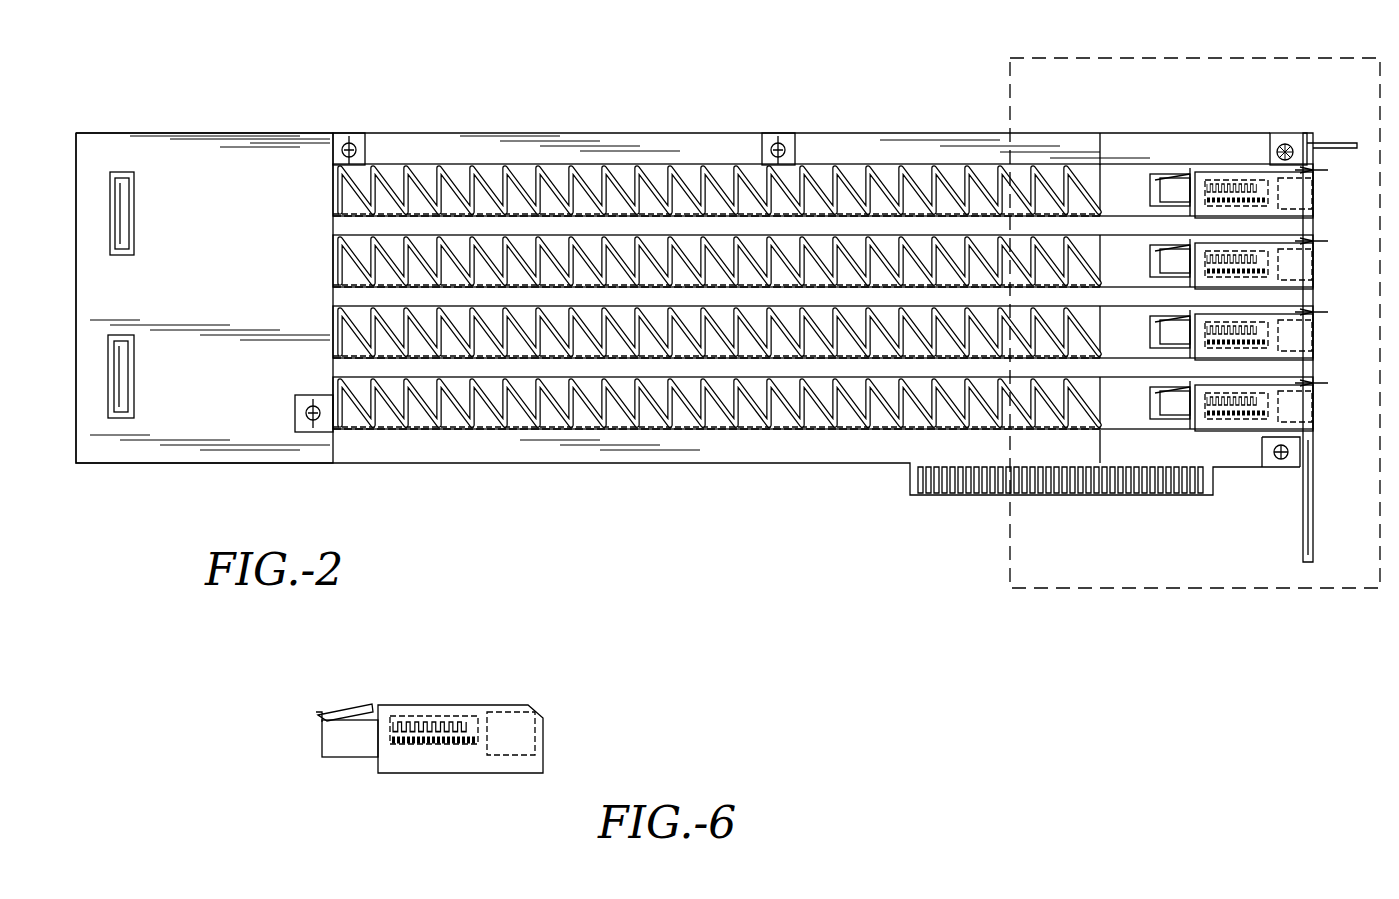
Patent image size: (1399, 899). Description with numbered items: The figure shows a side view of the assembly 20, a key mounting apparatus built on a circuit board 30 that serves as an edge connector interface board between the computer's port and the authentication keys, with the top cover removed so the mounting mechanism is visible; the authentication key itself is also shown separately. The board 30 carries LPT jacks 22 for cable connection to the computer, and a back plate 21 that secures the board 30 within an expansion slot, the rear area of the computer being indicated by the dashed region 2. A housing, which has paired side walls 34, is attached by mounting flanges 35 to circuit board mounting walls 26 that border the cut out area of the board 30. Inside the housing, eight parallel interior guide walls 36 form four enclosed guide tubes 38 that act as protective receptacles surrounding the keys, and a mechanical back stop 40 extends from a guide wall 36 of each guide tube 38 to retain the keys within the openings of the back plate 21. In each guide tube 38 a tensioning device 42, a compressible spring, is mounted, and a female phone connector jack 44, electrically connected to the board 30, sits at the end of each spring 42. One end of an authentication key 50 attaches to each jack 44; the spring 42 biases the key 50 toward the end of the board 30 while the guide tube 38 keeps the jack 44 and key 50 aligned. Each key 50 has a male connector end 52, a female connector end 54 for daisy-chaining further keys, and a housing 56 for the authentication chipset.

In FIG. 2, the cabinet / housing region 2 is at (1280, 594).
In FIG. 2, the assembly 20 is at (771, 100).
In FIG. 2, the back plate 21 is at (1343, 146).
In FIG. 2, the LPT jack 22 is at (124, 172).
In FIG. 2, the circuit board mounting walls 26 is at (490, 134).
In FIG. 2, the circuit board 30 is at (206, 212).
In FIG. 2, the side walls 34 is at (772, 432).
In FIG. 2, the mounting flanges 35 is at (348, 140).
In FIG. 2, the interior guide walls 36 is at (520, 167).
In FIG. 2, the guide tubes 38 is at (597, 382).
In FIG. 2, the mechanical back stop 40 is at (1290, 156).
In FIG. 2, the tensioning device 42 is at (436, 188).
In FIG. 2, the female phone connector jack 44 is at (1130, 414).
In FIG. 2, the authentication key 50 is at (1233, 190).
In FIG. 6, the authentication key 50 is at (443, 776).
In FIG. 6, the male connector end 52 is at (342, 757).
In FIG. 6, the female connector end 54 is at (525, 726).
In FIG. 6, the housing 56 is at (402, 718).